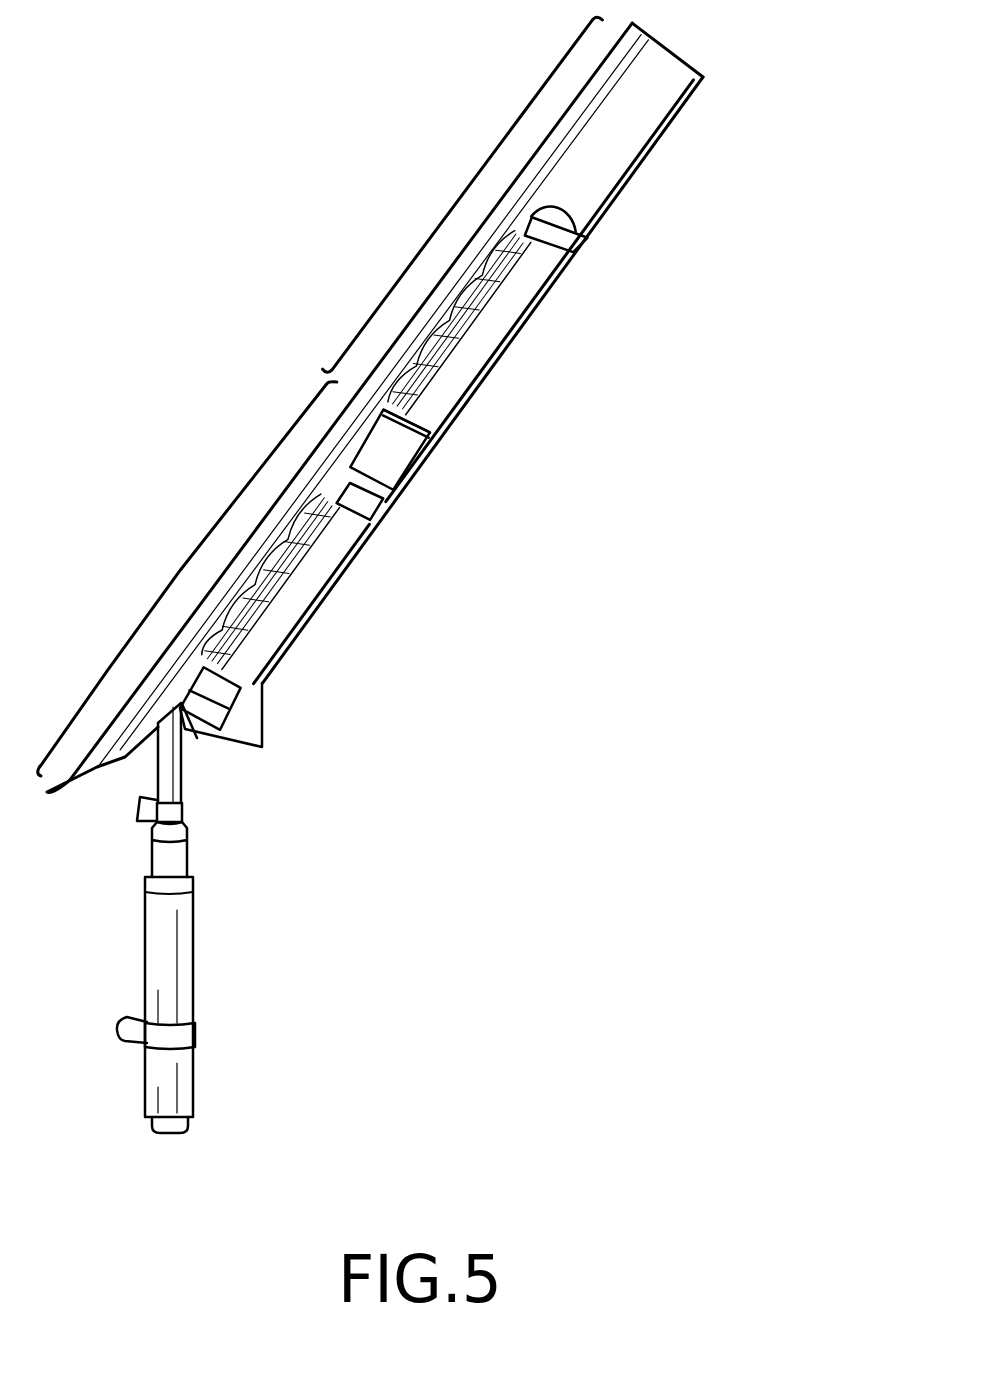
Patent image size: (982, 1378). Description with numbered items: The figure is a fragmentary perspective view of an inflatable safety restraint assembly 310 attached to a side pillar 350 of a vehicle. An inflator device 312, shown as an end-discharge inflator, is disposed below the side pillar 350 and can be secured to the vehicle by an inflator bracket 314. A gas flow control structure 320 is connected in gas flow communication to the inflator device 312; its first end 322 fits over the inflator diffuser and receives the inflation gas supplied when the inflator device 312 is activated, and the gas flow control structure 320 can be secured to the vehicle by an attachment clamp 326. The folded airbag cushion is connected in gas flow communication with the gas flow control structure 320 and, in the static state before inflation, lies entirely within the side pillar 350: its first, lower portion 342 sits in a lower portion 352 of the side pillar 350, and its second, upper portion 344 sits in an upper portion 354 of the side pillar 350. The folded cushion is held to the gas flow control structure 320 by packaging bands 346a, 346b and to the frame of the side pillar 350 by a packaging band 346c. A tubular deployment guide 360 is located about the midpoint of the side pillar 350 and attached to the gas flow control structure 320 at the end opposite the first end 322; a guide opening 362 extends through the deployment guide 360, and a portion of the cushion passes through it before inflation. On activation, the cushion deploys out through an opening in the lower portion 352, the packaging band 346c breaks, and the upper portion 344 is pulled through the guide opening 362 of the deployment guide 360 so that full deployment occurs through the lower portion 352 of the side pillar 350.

The inflatable safety restraint assembly 310 is at (216, 918).
The inflator device 312 is at (195, 989).
The inflator bracket 314 is at (117, 1029).
The gas flow control structure 320 is at (182, 776).
The first end 322 is at (190, 860).
The attachment clamp 326 is at (137, 804).
The lower portion of the airbag cushion 342 is at (347, 594).
The upper portion of the airbag cushion 344 is at (525, 349).
The packaging band 346a is at (263, 700).
The packaging band 346b is at (377, 513).
The packaging band 346c is at (573, 242).
The side pillar 350 is at (657, 138).
The lower portion of the side pillar 352 is at (188, 558).
The upper portion of the side pillar 354 is at (474, 179).
The tubular deployment guide 360 is at (451, 453).
The guide opening 362 is at (420, 425).